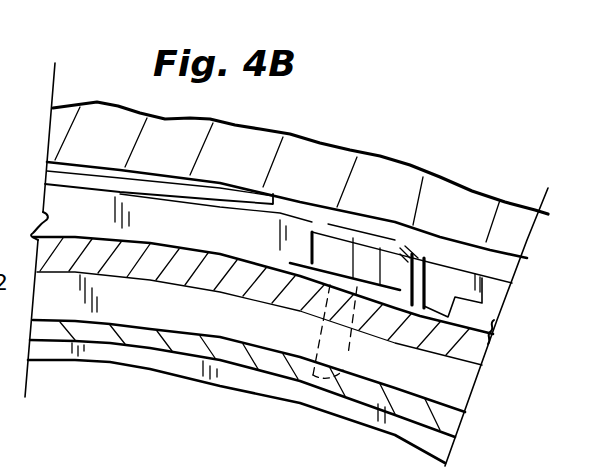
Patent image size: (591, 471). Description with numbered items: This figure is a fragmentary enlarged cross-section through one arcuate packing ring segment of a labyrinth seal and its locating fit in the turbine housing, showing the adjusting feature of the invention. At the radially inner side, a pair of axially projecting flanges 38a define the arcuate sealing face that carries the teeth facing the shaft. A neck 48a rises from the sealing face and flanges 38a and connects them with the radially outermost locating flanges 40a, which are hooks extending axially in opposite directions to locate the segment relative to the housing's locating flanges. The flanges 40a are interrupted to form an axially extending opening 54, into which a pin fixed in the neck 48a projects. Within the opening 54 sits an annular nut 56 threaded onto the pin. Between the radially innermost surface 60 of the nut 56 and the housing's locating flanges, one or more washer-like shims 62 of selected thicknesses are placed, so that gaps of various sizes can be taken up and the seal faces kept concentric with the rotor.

The locating flange 40a is at (291, 235).
The axially extending opening 54 is at (318, 256).
The annular nut 56 is at (424, 258).
The shim 62 is at (300, 300).
The radially innermost surface 60 is at (360, 295).
The axially projecting flange 38a is at (92, 334).
The neck 48a is at (167, 318).